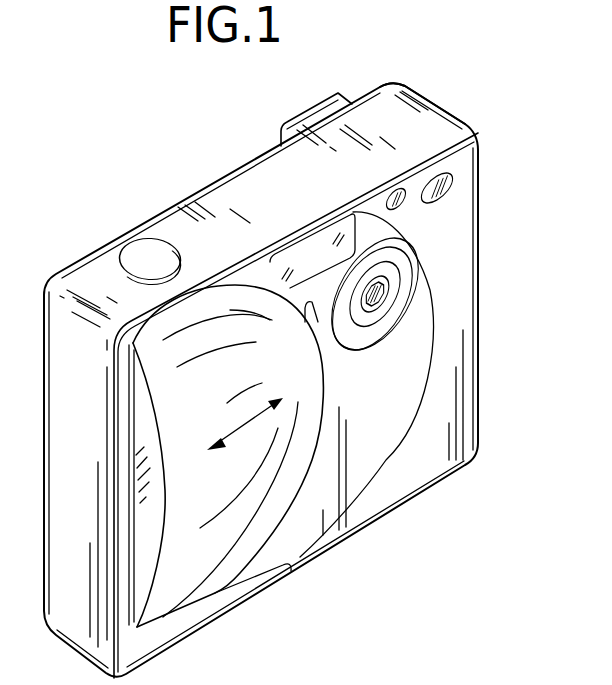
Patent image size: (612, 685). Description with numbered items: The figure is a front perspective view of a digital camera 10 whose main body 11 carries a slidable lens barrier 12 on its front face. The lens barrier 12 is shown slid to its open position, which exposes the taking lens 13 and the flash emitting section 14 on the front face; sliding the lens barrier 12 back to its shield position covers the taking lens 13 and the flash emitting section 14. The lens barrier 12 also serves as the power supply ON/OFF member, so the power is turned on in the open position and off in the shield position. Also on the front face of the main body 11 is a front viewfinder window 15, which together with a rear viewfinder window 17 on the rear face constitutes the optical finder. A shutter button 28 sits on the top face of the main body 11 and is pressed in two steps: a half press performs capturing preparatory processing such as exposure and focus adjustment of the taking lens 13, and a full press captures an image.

The digital camera 10 is at (134, 132).
The main body 11 is at (438, 94).
The lens barrier 12 is at (290, 393).
The taking lens 13 is at (375, 294).
The flash emitting section 14 is at (318, 250).
The front viewfinder window 15 is at (449, 192).
The rear viewfinder window 17 is at (336, 94).
The shutter button 28 is at (145, 261).